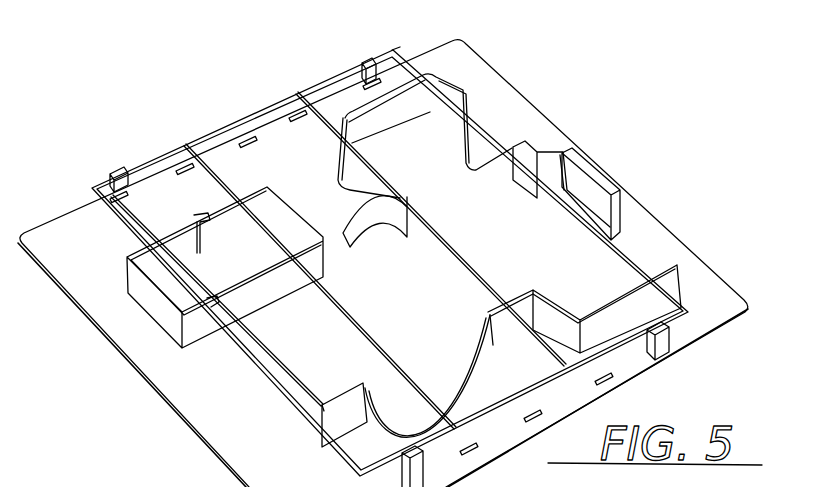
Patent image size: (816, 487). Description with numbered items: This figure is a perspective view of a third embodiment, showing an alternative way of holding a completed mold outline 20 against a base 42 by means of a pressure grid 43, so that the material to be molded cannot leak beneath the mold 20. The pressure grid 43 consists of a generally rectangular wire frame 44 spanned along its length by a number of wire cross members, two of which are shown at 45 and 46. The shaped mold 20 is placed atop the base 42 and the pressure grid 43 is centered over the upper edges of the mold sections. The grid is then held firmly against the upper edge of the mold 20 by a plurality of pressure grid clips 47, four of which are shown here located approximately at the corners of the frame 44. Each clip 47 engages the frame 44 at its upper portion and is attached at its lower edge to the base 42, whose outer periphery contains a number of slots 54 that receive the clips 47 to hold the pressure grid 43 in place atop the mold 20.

The mold outline 20 is at (574, 180).
The base 42 is at (676, 263).
The pressure grid 43 is at (403, 48).
The wire frame 44 is at (227, 124).
The wire cross member 45 is at (327, 300).
The wire cross member 46 is at (457, 262).
The pressure grid clip 47 is at (115, 170).
The slot 54 is at (126, 199).